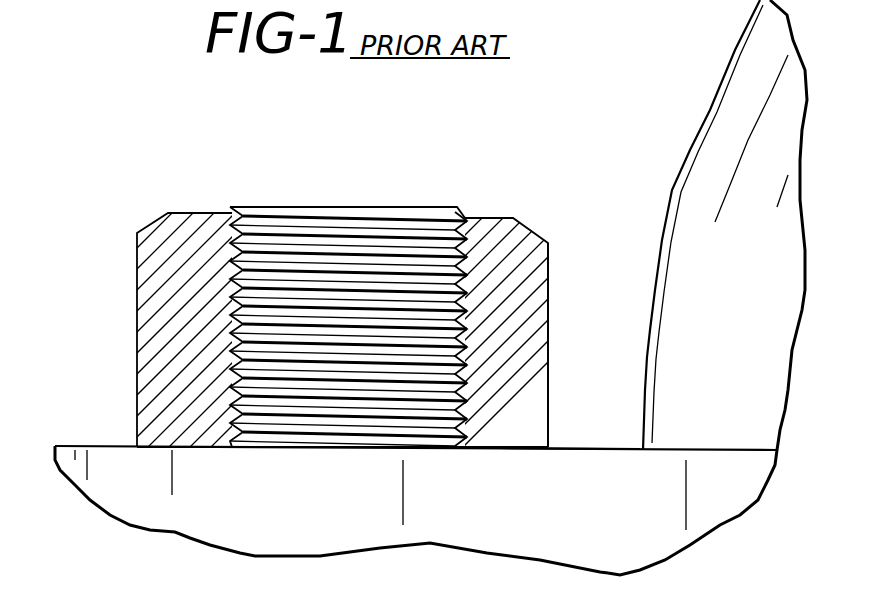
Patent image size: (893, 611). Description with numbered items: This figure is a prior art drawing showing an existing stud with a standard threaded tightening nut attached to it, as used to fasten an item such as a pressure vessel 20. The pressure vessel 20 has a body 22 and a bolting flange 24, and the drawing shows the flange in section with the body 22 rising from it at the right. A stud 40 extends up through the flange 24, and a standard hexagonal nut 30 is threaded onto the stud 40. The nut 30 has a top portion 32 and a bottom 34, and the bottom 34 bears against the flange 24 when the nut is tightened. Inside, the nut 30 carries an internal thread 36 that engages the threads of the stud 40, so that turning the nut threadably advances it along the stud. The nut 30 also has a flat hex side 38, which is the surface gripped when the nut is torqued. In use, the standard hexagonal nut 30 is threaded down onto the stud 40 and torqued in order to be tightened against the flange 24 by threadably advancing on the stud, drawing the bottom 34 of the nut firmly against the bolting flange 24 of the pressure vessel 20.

The pressure vessel 20 is at (634, 196).
The body 22 is at (712, 77).
The bolting flange 24 is at (95, 445).
The standard hexagonal nut 30 is at (134, 244).
The top portion 32 is at (193, 212).
The bottom 34 is at (515, 448).
The internal thread 36 is at (243, 220).
The flat hex side 38 is at (548, 283).
The stud 40 is at (363, 215).